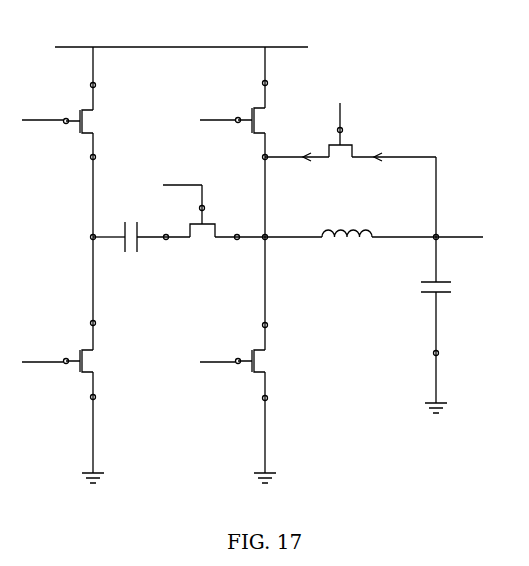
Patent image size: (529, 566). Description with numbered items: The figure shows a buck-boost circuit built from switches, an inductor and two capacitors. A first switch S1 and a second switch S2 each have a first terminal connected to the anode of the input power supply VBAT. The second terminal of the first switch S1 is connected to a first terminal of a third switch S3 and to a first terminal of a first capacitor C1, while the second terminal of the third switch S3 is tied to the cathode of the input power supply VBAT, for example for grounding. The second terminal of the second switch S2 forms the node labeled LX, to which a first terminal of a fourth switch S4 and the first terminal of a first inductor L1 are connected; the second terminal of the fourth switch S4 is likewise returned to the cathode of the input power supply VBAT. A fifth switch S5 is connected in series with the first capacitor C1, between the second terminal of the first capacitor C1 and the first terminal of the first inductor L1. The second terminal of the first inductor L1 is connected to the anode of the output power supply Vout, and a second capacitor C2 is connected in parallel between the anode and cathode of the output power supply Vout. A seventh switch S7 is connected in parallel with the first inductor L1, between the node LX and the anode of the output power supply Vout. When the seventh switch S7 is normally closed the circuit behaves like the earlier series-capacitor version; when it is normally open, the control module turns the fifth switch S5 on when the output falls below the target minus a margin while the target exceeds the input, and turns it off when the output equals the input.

The first switch S1 is at (56, 117).
The second switch S2 is at (225, 117).
The third switch S3 is at (56, 358).
The fourth switch S4 is at (229, 358).
The fifth switch S5 is at (214, 203).
The seventh switch S7 is at (350, 123).
The first capacitor C1 is at (141, 251).
The second capacitor C2 is at (449, 325).
The first inductor L1 is at (350, 251).
The input power supply VBAT is at (181, 32).
The switching node LX is at (289, 226).
The output power supply Vout is at (459, 228).